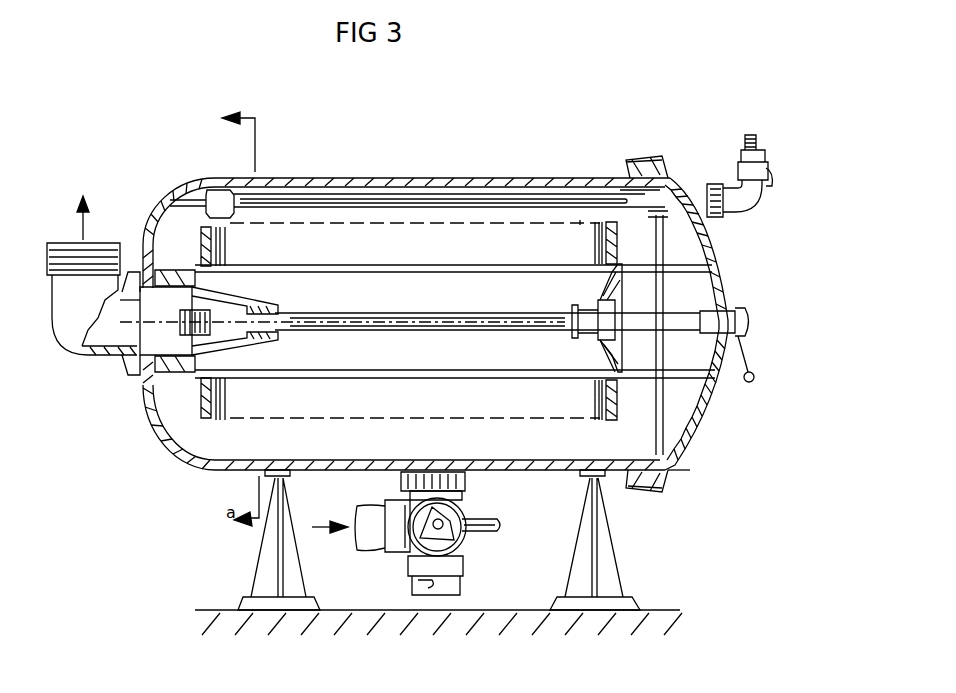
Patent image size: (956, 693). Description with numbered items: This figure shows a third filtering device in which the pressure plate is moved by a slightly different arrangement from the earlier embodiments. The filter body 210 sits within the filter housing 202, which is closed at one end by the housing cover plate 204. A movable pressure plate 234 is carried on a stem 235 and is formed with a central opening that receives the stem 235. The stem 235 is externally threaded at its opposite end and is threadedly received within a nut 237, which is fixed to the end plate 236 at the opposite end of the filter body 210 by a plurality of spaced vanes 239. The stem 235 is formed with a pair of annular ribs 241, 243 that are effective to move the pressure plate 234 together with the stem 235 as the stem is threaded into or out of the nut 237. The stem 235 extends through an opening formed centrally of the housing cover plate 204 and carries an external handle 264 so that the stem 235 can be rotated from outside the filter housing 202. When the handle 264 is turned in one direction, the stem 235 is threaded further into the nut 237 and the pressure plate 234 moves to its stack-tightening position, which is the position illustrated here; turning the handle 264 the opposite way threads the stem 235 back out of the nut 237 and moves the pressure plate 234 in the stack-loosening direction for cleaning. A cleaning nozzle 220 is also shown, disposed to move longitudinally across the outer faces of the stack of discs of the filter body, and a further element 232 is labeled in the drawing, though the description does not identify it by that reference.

The filter housing 202 is at (361, 164).
The housing cover plate 204 is at (692, 460).
The filter body 210 is at (548, 218).
The cleaning nozzle 220 is at (218, 192).
The inner drum 232 is at (578, 224).
The movable pressure plate 234 is at (618, 254).
The stem 235 is at (394, 314).
The end plate 236 is at (200, 400).
The nut 237 is at (269, 302).
The spaced vanes 239 is at (190, 280).
The annular rib 241 is at (566, 312).
The annular rib 243 is at (620, 302).
The external handle 264 is at (738, 375).